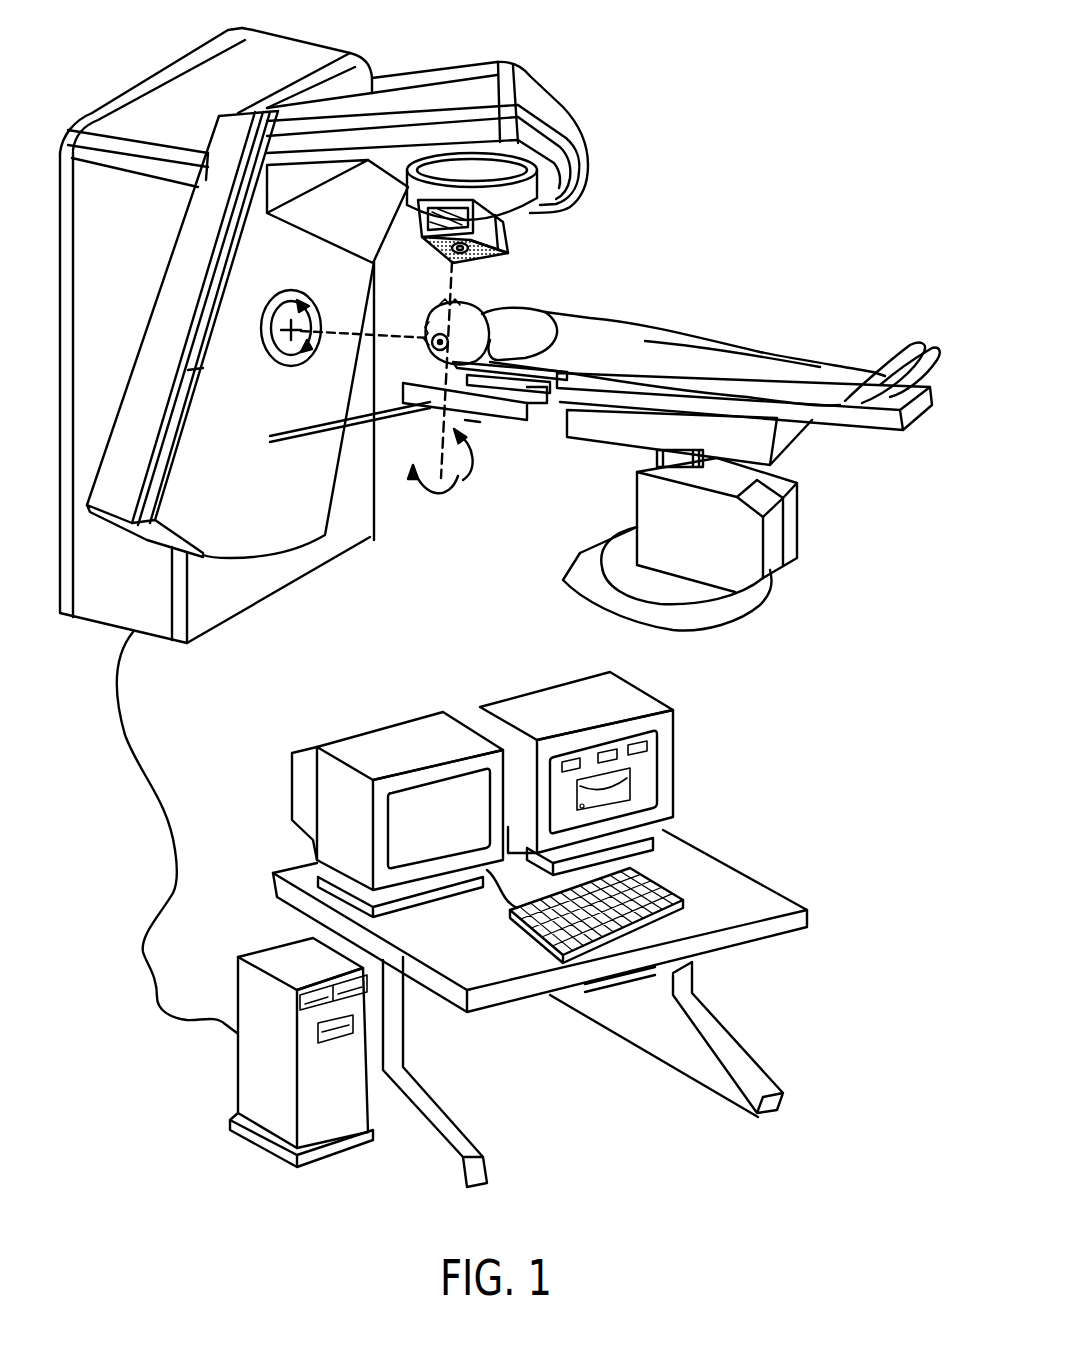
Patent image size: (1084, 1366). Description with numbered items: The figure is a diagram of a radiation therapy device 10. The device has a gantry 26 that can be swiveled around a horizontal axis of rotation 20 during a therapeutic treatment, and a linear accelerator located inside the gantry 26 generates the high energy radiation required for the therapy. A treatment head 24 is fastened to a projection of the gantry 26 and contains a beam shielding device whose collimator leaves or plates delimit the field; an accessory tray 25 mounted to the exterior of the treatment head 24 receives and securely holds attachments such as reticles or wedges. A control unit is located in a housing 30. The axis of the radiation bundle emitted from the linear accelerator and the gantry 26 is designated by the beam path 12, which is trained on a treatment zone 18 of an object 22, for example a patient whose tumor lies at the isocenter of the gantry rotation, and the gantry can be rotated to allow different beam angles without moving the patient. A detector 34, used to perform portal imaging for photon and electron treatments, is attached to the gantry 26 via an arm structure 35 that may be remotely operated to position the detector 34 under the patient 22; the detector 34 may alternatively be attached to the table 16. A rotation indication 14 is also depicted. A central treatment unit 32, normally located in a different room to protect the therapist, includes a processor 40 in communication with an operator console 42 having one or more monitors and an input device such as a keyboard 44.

The radiation therapy device 10 is at (755, 180).
The beam path 12 is at (453, 266).
The gantry rotation arrow 14 is at (452, 473).
The table 16 is at (612, 430).
The treatment zone 18 is at (432, 342).
The horizontal axis of rotation 20 is at (353, 336).
The object 22 is at (612, 325).
The treatment head 24 is at (540, 230).
The accessory tray 25 is at (507, 240).
The gantry 26 is at (152, 325).
The housing 30 is at (303, 50).
The treatment unit 32 is at (328, 690).
The detector 34 is at (472, 422).
The arm structure 35 is at (307, 440).
The processor 40 is at (237, 1087).
The operator console 42 is at (663, 770).
The keyboard 44 is at (667, 885).